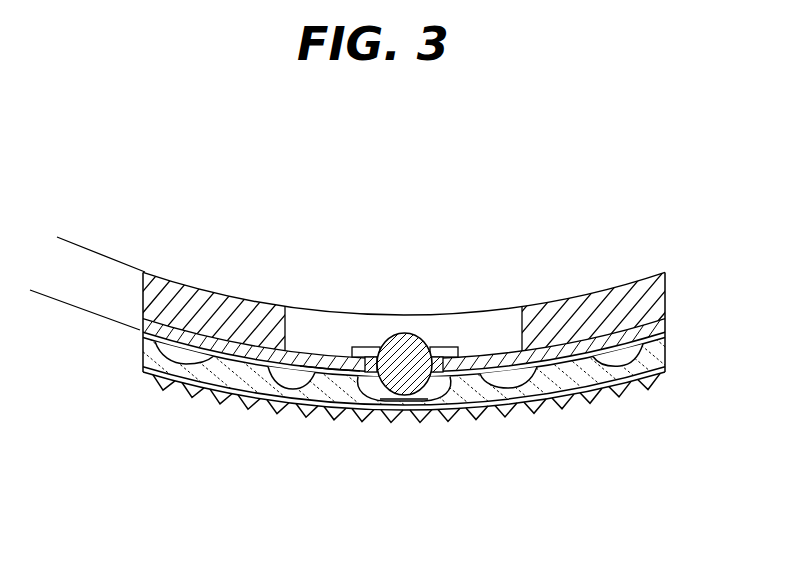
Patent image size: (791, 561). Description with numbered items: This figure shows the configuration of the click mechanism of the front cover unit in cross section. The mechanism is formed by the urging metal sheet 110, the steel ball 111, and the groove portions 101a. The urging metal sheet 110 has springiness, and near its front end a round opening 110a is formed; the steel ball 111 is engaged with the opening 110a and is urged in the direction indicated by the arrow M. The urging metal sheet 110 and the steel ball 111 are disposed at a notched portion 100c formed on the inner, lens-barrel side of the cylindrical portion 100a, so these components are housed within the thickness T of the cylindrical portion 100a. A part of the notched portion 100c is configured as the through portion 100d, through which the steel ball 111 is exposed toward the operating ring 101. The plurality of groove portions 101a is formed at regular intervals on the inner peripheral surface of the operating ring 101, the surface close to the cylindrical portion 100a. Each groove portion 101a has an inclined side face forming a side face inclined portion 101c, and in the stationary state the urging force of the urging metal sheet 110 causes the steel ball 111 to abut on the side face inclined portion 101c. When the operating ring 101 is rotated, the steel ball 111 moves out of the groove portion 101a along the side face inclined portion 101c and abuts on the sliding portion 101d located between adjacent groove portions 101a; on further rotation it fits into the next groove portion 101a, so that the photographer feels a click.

The cylindrical portion 100a is at (233, 318).
The notched portion 100c is at (497, 328).
The through portion 100d is at (474, 374).
The operating ring 101 is at (640, 372).
The groove portion 101a is at (293, 382).
The side face inclined portion 101c is at (450, 398).
The sliding portion 101d is at (333, 378).
The urging metal sheet 110 is at (442, 345).
The opening 110a is at (427, 327).
The steel ball 111 is at (378, 396).
The thickness T is at (62, 245).
The urging direction M is at (340, 340).